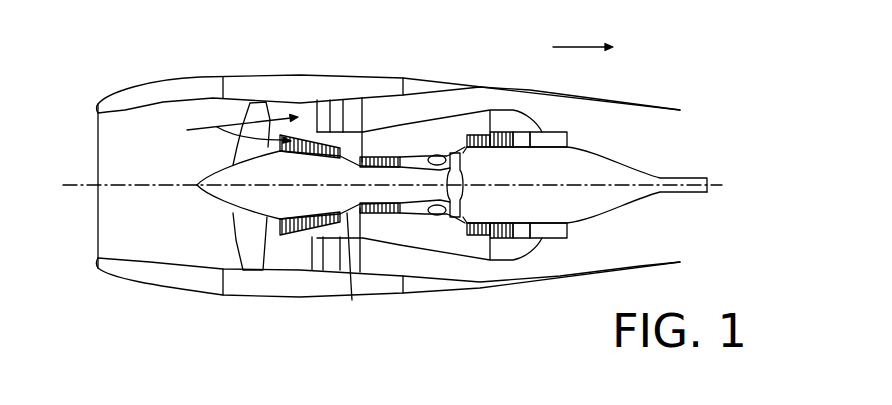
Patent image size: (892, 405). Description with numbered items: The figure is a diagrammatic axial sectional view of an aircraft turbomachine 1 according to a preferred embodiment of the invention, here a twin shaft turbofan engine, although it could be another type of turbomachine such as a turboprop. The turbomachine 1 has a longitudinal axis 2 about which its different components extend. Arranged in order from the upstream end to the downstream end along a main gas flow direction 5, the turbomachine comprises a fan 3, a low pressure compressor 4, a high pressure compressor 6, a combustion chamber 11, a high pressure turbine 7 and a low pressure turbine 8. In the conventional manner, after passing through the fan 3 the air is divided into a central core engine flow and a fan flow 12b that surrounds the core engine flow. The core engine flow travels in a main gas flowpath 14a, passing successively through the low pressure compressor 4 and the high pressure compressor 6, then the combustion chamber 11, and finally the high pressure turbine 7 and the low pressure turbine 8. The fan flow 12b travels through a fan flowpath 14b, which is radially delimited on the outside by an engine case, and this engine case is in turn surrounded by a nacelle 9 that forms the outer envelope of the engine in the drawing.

The aircraft turbomachine 1 is at (191, 52).
The longitudinal axis 2 is at (82, 185).
The fan 3 is at (245, 238).
The fan flow 12b is at (250, 103).
The low pressure compressor 4 is at (296, 128).
The nacelle 9 is at (357, 76).
The high pressure compressor 6 is at (385, 150).
The combustion chamber 11 is at (433, 142).
The high pressure turbine 7 is at (469, 130).
The low pressure turbine 8 is at (505, 124).
The main gas flow direction 5 is at (583, 47).
The main gas flowpath 14a is at (351, 290).
The fan flowpath 14b is at (423, 262).